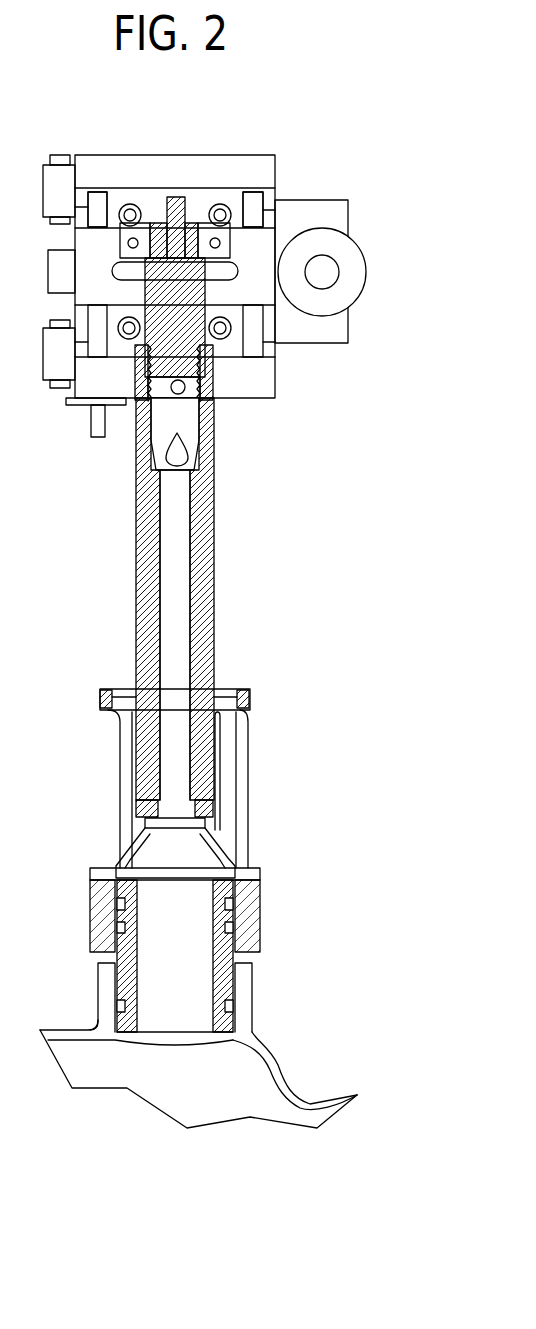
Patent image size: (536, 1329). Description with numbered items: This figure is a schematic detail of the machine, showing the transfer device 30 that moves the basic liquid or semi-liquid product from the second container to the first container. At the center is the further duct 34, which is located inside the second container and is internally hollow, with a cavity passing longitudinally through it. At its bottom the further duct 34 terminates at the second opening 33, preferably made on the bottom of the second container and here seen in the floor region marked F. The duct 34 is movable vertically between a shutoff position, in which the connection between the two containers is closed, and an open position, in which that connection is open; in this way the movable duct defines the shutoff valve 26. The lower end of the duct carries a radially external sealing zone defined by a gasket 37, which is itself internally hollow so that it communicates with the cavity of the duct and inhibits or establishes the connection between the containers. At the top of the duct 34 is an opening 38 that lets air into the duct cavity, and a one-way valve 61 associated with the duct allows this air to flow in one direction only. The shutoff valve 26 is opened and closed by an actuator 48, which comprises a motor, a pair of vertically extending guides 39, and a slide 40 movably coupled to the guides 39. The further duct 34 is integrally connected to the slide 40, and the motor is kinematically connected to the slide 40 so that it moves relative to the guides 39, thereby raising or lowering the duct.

The shutoff valve 26 is at (241, 831).
The transfer device 30 is at (275, 835).
The second opening 33 is at (188, 1028).
The further duct 34 is at (133, 614).
The gasket 37 is at (130, 842).
The opening 38 is at (186, 392).
The guide 39 is at (114, 197).
The slide 40 is at (253, 283).
The actuator 48 is at (354, 237).
The one-way valve 61 is at (150, 442).
The floor F is at (70, 1027).